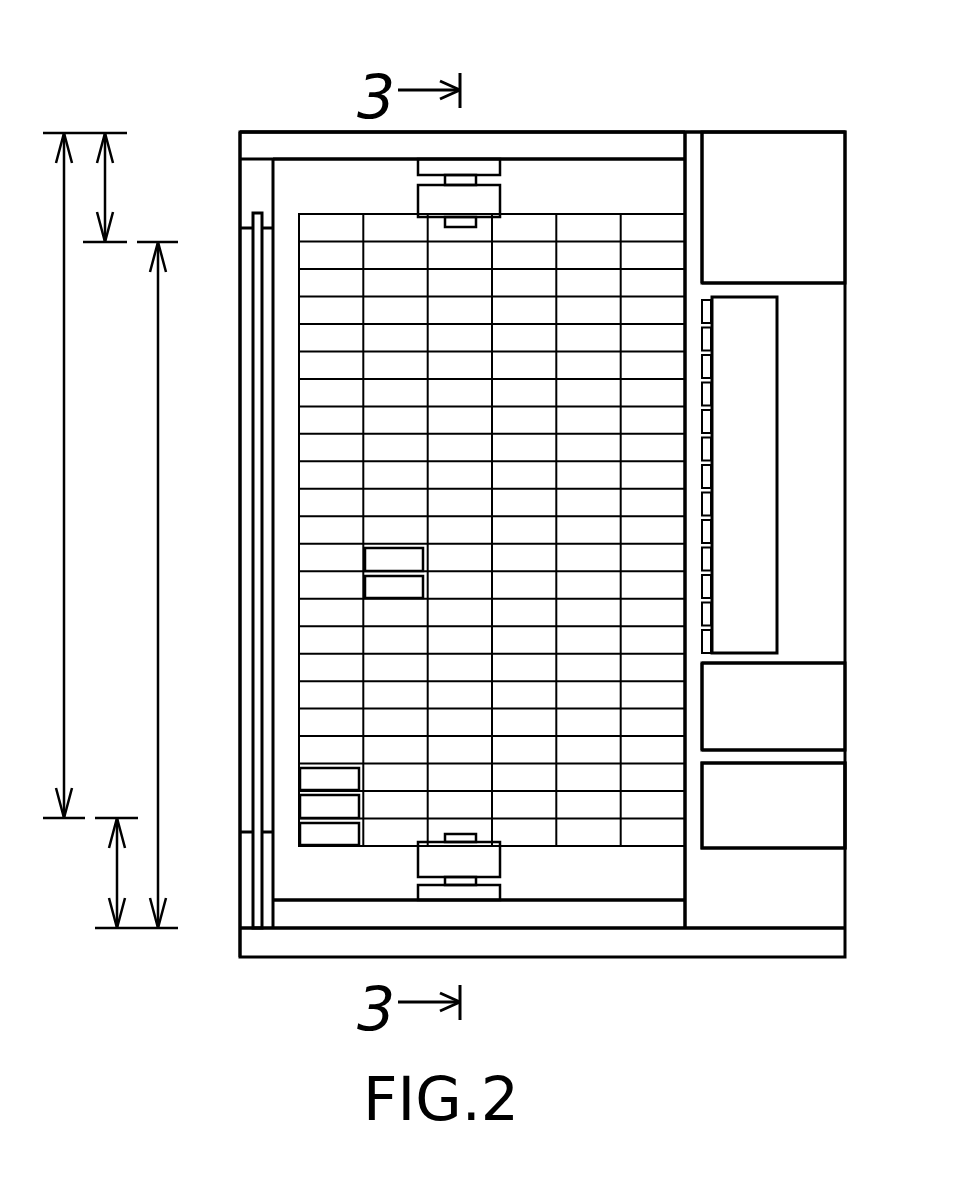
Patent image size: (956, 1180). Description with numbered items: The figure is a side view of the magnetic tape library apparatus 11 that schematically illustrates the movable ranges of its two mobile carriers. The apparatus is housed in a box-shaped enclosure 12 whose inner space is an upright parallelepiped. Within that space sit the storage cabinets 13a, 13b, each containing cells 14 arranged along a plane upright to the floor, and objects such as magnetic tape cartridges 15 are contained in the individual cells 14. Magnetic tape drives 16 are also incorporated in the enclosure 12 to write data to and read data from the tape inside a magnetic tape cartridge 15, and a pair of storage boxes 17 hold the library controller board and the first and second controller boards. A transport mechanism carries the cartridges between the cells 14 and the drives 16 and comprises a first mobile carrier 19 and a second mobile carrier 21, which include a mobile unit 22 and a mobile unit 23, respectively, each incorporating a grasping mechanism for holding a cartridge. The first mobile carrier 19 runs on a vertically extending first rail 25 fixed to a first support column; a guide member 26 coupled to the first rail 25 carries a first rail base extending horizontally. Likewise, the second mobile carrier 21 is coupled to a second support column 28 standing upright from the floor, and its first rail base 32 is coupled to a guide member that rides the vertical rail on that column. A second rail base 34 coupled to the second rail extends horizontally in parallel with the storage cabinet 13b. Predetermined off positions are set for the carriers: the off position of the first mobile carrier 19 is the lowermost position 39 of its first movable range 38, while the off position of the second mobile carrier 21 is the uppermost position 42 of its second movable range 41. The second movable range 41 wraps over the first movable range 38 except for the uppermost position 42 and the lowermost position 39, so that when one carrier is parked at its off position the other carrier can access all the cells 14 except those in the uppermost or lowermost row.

The magnetic tape library apparatus 11 is at (257, 98).
The enclosure 12 is at (692, 132).
The storage cabinet 13a is at (612, 213).
The storage cabinet 13b is at (777, 390).
The cell 14 is at (300, 773).
The magnetic tape cartridge 15 is at (700, 302).
The magnetic tape drive 16 is at (790, 663).
The storage box 17 is at (797, 132).
The first mobile carrier 19 is at (348, 915).
The second mobile carrier 21 is at (343, 143).
The mobile unit 22 is at (418, 857).
The mobile unit 23 is at (418, 200).
The first rail 25 is at (240, 878).
The guide member 26 is at (632, 900).
The second support column 28 is at (240, 352).
The first rail base 32 is at (532, 132).
The second rail base 34 is at (503, 168).
The first movable range 38 is at (136, 585).
The lowermost position 39 is at (102, 873).
The second movable range 41 is at (71, 475).
The uppermost position 42 is at (121, 187).